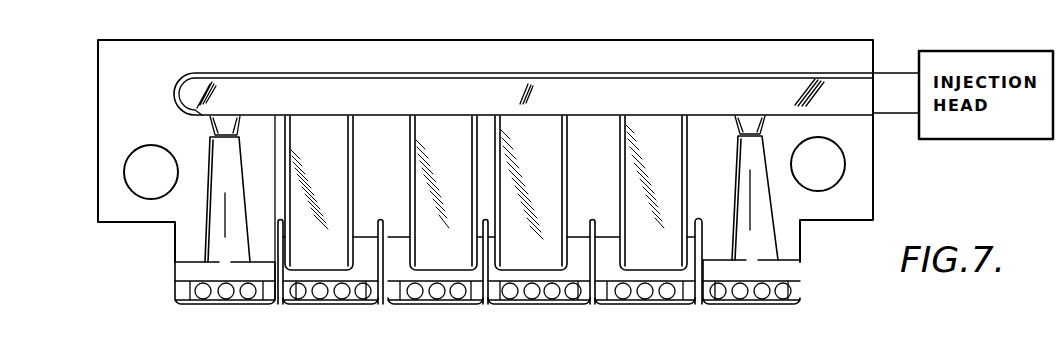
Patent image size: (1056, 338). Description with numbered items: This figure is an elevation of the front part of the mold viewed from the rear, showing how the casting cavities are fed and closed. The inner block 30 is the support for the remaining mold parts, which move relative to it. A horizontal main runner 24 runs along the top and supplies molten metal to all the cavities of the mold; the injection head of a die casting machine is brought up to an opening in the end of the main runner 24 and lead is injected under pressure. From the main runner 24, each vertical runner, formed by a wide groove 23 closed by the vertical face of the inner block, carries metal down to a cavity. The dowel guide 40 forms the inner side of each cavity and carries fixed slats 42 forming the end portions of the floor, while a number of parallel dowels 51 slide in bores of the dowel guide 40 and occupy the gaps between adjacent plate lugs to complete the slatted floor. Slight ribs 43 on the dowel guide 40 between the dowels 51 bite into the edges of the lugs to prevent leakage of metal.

The wide groove 23 is at (308, 127).
The horizontal main runner 24 is at (432, 78).
The inner block 30 is at (575, 45).
The dowel guide 40 is at (212, 302).
The fixed slats 42 is at (175, 285).
The ribs 43 is at (228, 300).
The dowels 51 is at (318, 300).